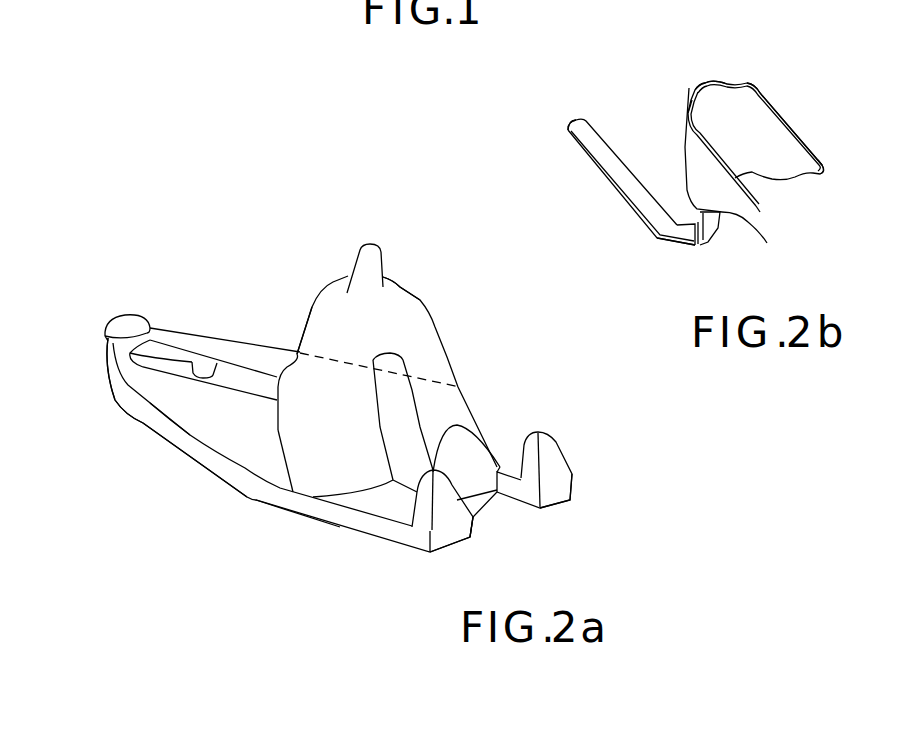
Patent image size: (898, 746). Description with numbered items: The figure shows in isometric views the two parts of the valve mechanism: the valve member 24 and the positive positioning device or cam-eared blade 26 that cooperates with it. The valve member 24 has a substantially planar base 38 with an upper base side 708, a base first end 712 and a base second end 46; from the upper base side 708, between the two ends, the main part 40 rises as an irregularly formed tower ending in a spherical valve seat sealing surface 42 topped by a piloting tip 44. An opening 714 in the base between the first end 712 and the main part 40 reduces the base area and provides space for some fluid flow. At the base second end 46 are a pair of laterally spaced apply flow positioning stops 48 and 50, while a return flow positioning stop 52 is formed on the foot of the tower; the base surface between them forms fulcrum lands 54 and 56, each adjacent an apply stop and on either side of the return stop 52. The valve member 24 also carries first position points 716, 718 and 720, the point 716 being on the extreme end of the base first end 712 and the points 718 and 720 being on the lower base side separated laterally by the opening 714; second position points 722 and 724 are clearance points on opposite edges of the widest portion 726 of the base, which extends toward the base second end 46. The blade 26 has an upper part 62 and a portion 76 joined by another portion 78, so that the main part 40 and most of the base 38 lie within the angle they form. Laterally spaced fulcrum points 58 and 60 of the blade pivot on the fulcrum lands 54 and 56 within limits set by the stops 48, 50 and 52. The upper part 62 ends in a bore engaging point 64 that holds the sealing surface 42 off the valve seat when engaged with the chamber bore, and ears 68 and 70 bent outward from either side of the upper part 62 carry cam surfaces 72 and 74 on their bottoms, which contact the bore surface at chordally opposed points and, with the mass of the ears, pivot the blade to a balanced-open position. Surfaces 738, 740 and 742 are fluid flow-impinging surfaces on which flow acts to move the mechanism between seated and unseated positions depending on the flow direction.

In FIG. 2A, the valve member 24 is at (307, 215).
In FIG. 2B, the blade 26 is at (672, 92).
In FIG. 2A, the base 38 is at (165, 434).
In FIG. 2A, the main part 40 is at (320, 313).
In FIG. 2A, the valve seat sealing surface 42 is at (400, 300).
In FIG. 2A, the tip 44 is at (373, 262).
In FIG. 2A, the base second end 46 is at (450, 534).
In FIG. 2A, the apply flow positioning stop 48 is at (523, 435).
In FIG. 2A, the apply flow positioning stop 50 is at (412, 500).
In FIG. 2A, the return flow positioning stop 52 is at (465, 440).
In FIG. 2A, the fulcrum land 54 is at (512, 463).
In FIG. 2A, the fulcrum land 56 is at (358, 497).
In FIG. 2B, the fulcrum point 58 is at (767, 243).
In FIG. 2B, the fulcrum point 60 is at (696, 245).
In FIG. 2B, the upper part 62 is at (718, 120).
In FIG. 2B, the bore engaging point 64 is at (697, 88).
In FIG. 2B, the ear 68 is at (823, 165).
In FIG. 2B, the ear 70 is at (763, 215).
In FIG. 2B, the cam surface 72 is at (768, 187).
In FIG. 2B, the cam surface 74 is at (717, 240).
In FIG. 2B, the blade portion 76 is at (588, 130).
In FIG. 2B, the blade portion 78 is at (672, 240).
In FIG. 2A, the upper base side 708 is at (218, 445).
In FIG. 2A, the base first end 712 is at (125, 316).
In FIG. 2A, the opening 714 is at (173, 362).
In FIG. 2A, the first position point 716 is at (106, 334).
In FIG. 2A, the first position point 718 is at (128, 408).
In FIG. 2A, the first position point 720 is at (217, 363).
In FIG. 2A, the second position point 722 is at (247, 487).
In FIG. 2A, the second position point 724 is at (460, 387).
In FIG. 2A, the portion 726 is at (270, 473).
In FIG. 2B, the fluid flow-impinging surface 738 is at (613, 170).
In FIG. 2B, the fluid flow-impinging surface 740 is at (686, 152).
In FIG. 2B, the fluid flow-impinging surface 742 is at (720, 135).